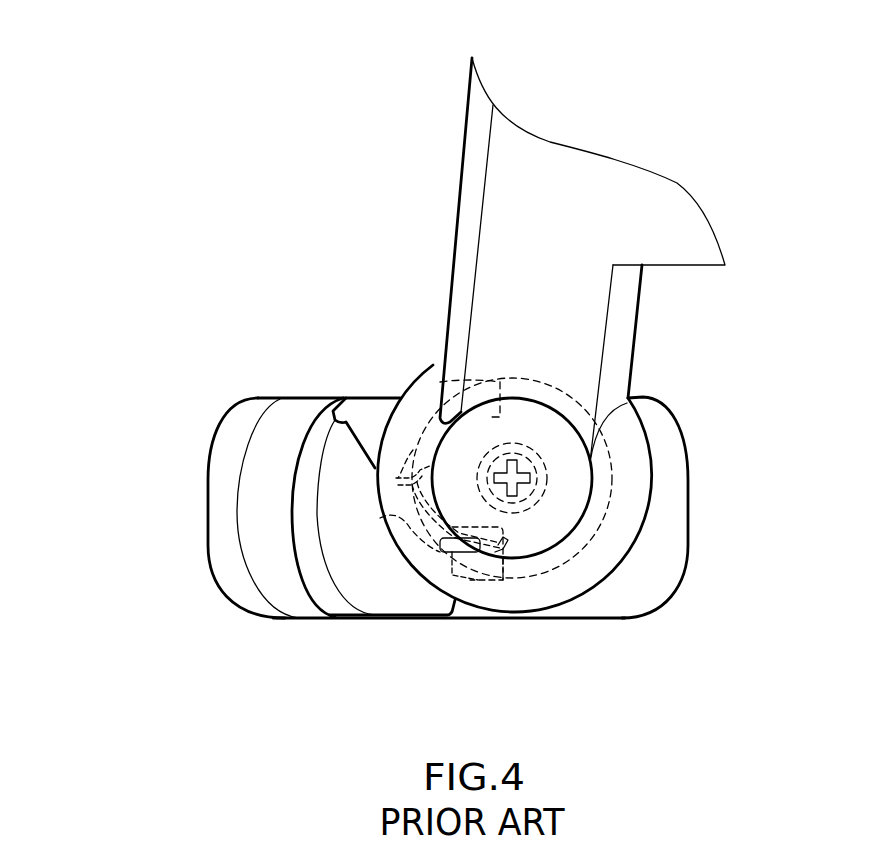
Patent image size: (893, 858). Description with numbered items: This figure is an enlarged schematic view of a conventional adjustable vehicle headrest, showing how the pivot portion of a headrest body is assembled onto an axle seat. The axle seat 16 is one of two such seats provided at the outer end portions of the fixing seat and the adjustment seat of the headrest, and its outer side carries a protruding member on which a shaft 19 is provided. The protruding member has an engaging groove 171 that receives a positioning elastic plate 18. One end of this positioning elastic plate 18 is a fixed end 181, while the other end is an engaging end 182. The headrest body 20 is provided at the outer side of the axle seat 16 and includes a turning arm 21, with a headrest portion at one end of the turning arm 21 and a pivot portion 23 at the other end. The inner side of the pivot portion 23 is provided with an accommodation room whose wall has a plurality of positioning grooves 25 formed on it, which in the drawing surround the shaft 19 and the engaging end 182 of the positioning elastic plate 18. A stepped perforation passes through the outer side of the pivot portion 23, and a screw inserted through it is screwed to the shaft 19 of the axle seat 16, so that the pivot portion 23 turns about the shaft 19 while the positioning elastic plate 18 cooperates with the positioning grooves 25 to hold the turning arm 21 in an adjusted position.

The axle seat 16 is at (660, 533).
The positioning elastic plate 18 is at (410, 508).
The shaft 19 is at (455, 460).
The headrest body 20 is at (425, 120).
The turning arm 21 is at (497, 268).
The pivot portion 23 is at (627, 470).
The positioning grooves 25 is at (415, 520).
The engaging groove 171 is at (470, 577).
The fixed end 181 is at (508, 552).
The engaging end 182 is at (396, 478).